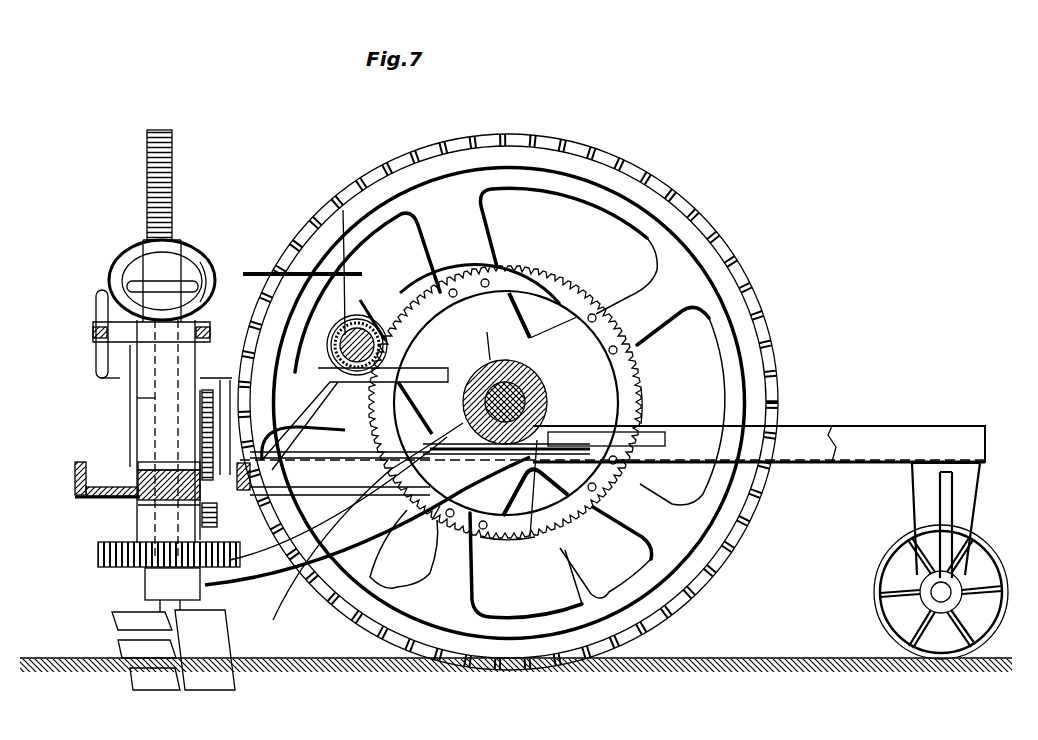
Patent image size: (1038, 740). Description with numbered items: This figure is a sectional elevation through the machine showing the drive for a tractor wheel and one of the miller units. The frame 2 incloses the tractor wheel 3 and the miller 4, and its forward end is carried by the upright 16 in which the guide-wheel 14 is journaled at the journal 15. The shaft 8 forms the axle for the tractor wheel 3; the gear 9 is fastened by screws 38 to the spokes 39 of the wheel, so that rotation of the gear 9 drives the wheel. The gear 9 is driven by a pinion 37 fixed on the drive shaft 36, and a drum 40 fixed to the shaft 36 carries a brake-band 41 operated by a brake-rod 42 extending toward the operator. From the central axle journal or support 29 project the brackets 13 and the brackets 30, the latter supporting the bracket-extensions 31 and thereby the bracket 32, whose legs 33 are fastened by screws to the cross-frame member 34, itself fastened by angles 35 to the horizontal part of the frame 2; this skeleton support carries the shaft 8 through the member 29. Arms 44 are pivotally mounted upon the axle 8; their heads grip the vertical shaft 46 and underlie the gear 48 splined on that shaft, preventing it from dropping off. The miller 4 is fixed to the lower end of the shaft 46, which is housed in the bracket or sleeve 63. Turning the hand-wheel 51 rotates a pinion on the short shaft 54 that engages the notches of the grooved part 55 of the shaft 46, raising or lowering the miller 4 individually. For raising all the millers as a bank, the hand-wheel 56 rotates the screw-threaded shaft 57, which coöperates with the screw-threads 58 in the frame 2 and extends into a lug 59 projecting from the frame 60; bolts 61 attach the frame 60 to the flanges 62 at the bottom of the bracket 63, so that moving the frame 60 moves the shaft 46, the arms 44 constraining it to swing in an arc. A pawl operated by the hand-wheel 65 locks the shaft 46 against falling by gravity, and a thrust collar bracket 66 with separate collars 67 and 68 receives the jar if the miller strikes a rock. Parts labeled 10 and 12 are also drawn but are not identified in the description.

The frame 2 is at (759, 444).
The tractor wheels 3 is at (652, 186).
The miller 4 is at (180, 692).
The shaft 8 is at (552, 395).
The gears 9 is at (566, 283).
The bearing plate 10 is at (645, 433).
The gear teeth 12 is at (630, 378).
The brackets 13 is at (522, 540).
The guide-wheel 14 is at (878, 568).
The journal 15 is at (931, 590).
The upright 16 is at (915, 500).
The central axle journal or support 29 is at (487, 332).
The brackets 30 is at (432, 520).
The bracket-extensions 31 is at (434, 410).
The bracket 32 is at (300, 385).
The legs 33 is at (300, 450).
The cross-frame member 34 is at (238, 582).
The angles 35 is at (300, 478).
The drive shafts 36 is at (362, 398).
The pinions 37 is at (370, 322).
The screws 38 is at (487, 279).
The spokes 39 is at (510, 402).
The drums 40 is at (343, 210).
The brake-band 41 is at (376, 322).
The brake-rods 42 is at (264, 268).
The arms 44 is at (276, 608).
The shaft 46 is at (150, 400).
The gear 48 is at (98, 553).
The hand-wheel 51 is at (96, 305).
The short shaft 54 is at (96, 334).
The grooved part 55 is at (172, 166).
The hand-wheels 56 is at (207, 388).
The screw-threaded shafts 57 is at (100, 378).
The screw-threads 58 is at (140, 506).
The lug 59 is at (140, 530).
The frame 60 is at (78, 470).
The bolts 61 is at (148, 466).
The flanges 62 is at (140, 478).
The brackets 63 is at (151, 460).
The hand-wheel 65 is at (130, 285).
The thrust collar bracket 66 is at (130, 258).
The collar 67 is at (208, 280).
The collar 68 is at (175, 275).